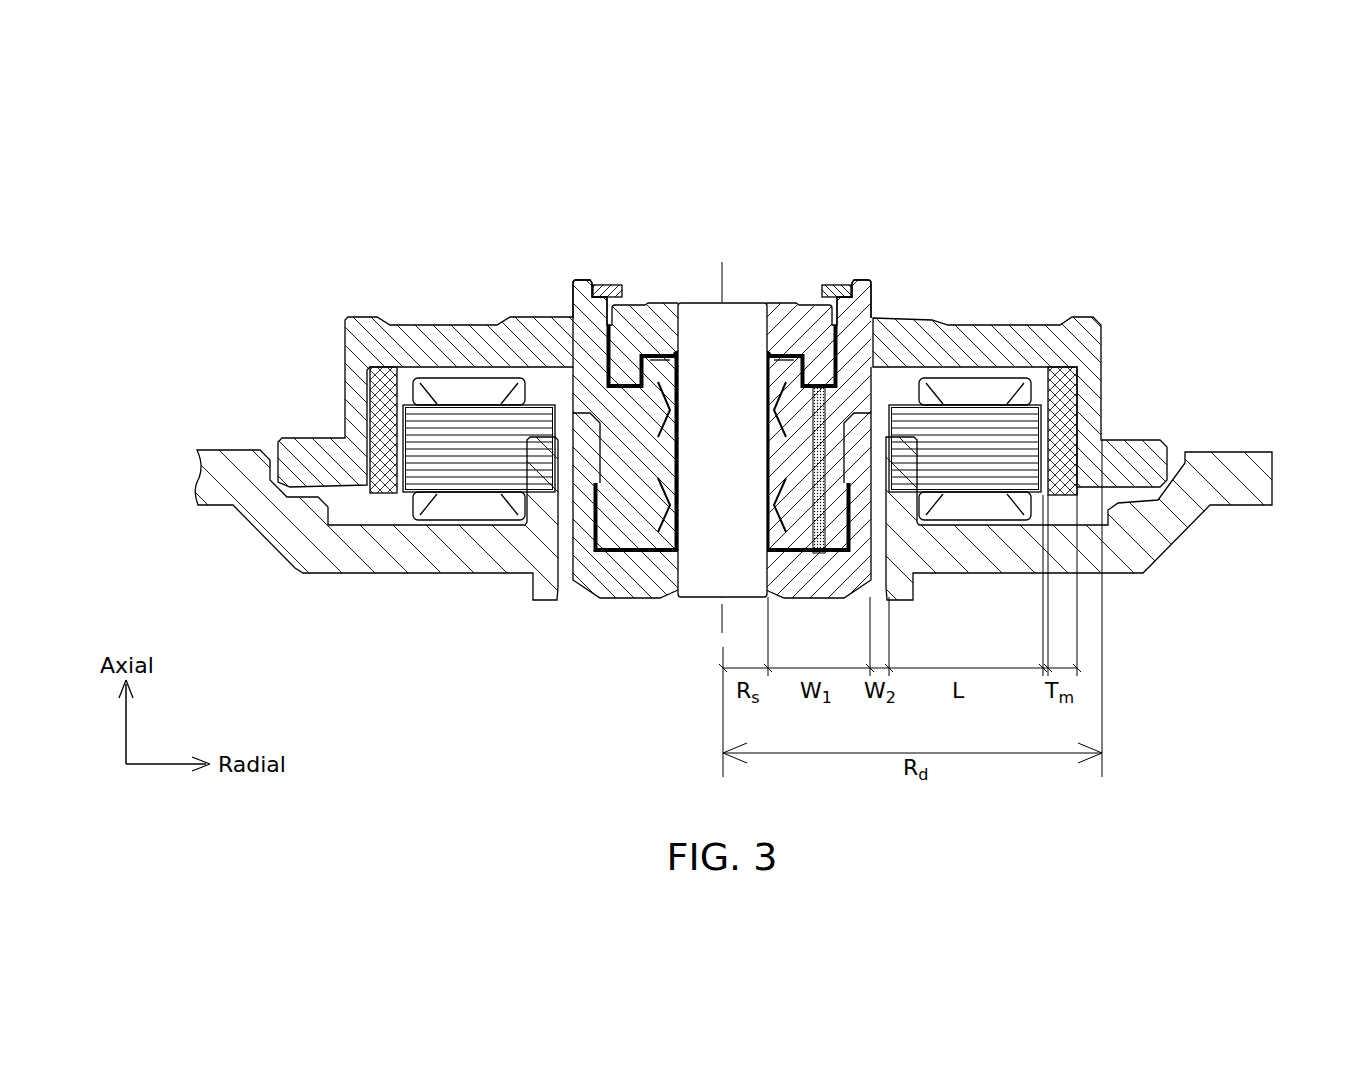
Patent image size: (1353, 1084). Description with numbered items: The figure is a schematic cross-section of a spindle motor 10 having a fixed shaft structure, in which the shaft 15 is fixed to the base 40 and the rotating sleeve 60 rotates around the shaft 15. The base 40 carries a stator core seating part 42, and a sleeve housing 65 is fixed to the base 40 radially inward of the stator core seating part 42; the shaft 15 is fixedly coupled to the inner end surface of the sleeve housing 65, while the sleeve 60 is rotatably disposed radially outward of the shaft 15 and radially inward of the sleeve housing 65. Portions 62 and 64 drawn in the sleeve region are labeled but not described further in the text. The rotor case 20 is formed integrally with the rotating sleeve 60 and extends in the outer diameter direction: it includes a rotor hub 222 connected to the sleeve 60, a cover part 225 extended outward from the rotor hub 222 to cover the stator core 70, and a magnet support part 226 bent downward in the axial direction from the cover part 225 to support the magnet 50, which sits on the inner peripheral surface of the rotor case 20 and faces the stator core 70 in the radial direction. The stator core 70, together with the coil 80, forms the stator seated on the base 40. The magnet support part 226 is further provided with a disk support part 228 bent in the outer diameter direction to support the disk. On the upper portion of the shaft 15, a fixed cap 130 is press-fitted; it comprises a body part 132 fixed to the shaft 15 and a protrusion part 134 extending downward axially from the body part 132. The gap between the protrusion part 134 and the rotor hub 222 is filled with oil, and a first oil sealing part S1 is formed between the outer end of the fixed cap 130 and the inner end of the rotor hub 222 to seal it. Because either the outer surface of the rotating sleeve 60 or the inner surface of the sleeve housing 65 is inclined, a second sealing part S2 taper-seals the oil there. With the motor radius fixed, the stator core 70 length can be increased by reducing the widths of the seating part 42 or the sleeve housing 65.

The spindle motor 10 is at (315, 176).
The shaft 15 is at (697, 577).
The rotor case 20 is at (1103, 316).
The base 40 is at (1192, 512).
The stator core seating part 42 is at (548, 514).
The magnet 50 is at (1063, 420).
The rotating sleeve 60 is at (635, 512).
The sleeve cup 62 is at (622, 380).
The sleeve upper portion 64 is at (653, 358).
The sleeve housing 65 is at (653, 575).
The stator core 70 is at (468, 478).
The coil 80 is at (437, 510).
The fixed cap 130 is at (827, 198).
The body part 132 is at (780, 322).
The protrusion part 134 is at (820, 360).
The rotor hub 222 is at (858, 325).
The cover part 225 is at (963, 335).
The magnet support part 226 is at (1093, 370).
The disk support part 228 is at (1138, 443).
The first oil sealing part S1 is at (608, 325).
The second sealing part S2 is at (568, 490).